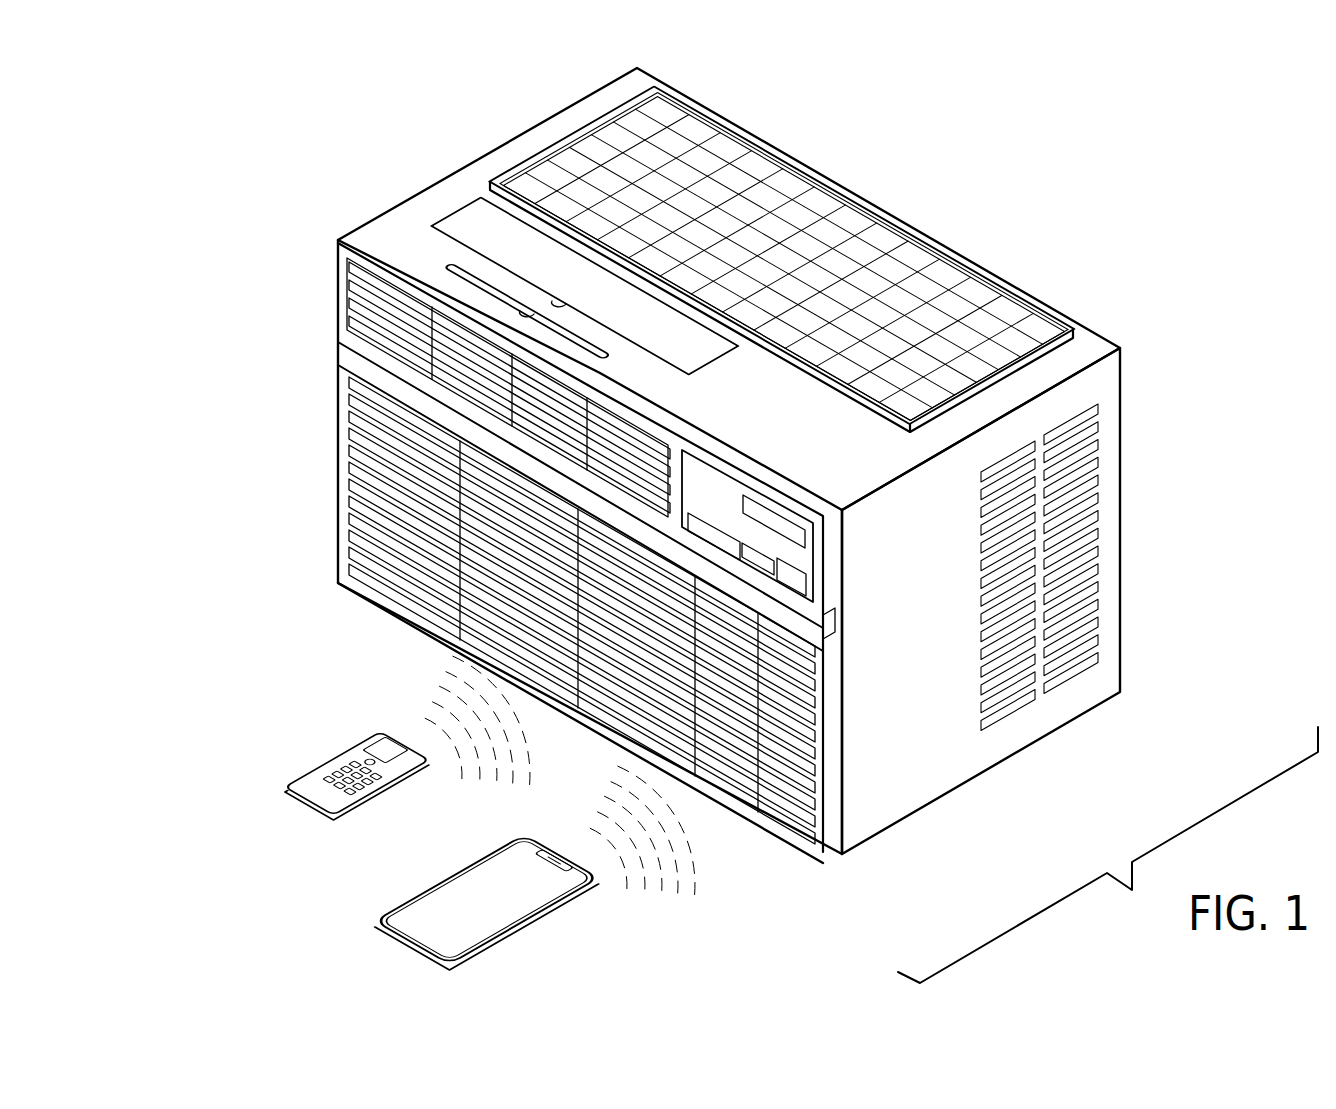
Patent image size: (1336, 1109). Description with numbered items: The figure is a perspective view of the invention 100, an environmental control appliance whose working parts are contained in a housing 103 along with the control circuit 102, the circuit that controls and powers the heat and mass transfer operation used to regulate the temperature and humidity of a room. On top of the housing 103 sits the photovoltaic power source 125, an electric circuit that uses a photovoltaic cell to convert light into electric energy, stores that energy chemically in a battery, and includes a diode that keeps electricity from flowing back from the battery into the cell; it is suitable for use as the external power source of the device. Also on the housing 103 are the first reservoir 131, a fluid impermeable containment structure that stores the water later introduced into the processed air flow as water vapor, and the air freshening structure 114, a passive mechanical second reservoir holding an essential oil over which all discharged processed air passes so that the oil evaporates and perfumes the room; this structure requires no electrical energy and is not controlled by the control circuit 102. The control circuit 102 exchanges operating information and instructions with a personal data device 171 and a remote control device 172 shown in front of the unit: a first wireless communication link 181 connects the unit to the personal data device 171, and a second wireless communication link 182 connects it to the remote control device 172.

The invention 100 is at (162, 168).
The control circuit 102 is at (812, 563).
The housing 103 is at (1083, 362).
The air freshening structure 114 is at (445, 267).
The photovoltaic power source 125 is at (948, 282).
The first reservoir 131 is at (478, 218).
The personal data device 171 is at (400, 946).
The remote control device 172 is at (300, 808).
The first wireless communication link 181 is at (660, 890).
The second wireless communication link 182 is at (477, 770).